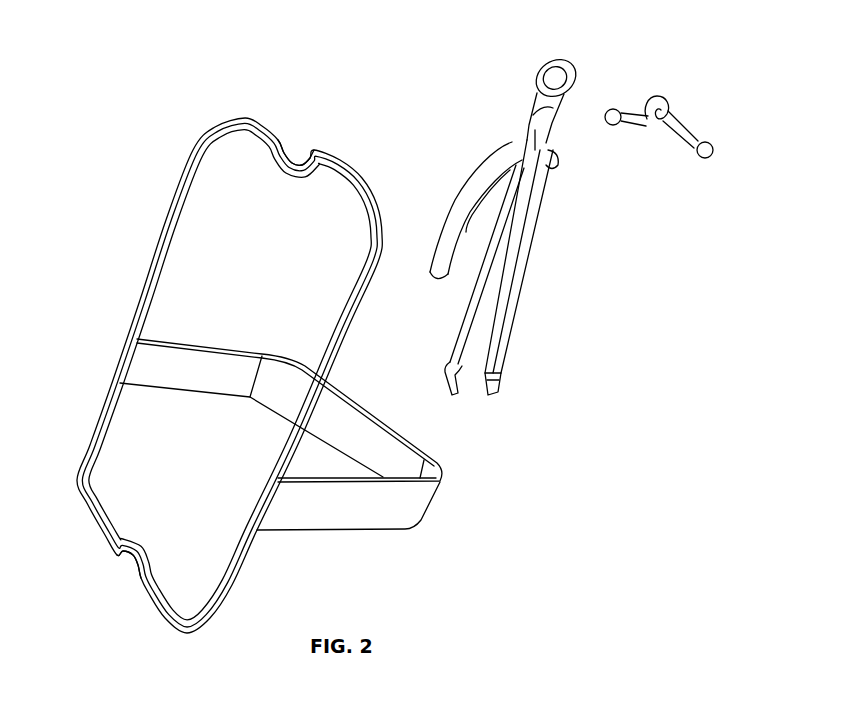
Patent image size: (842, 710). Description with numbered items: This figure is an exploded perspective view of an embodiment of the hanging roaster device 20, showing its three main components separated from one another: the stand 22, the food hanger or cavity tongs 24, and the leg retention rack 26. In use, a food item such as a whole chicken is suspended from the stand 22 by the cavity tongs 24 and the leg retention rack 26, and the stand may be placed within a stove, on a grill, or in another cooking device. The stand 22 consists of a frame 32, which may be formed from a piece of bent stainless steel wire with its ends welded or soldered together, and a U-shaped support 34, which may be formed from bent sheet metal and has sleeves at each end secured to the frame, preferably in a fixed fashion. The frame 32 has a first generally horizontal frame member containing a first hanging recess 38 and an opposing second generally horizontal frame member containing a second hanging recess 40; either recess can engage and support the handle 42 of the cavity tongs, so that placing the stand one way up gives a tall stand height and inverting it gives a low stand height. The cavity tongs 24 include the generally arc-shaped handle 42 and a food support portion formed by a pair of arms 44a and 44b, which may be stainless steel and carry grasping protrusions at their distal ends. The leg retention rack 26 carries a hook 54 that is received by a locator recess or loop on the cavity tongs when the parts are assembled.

The hanging roaster device 20 is at (198, 66).
The stand 22 is at (90, 374).
The cavity tongs 24 is at (500, 97).
The leg retention rack 26 is at (693, 104).
The frame 32 is at (133, 290).
The support 34 is at (378, 534).
The first hanging recess 38 is at (290, 168).
The second hanging recess 40 is at (140, 553).
The handle 42 is at (476, 172).
The arm 44a is at (508, 335).
The arm 44b is at (460, 331).
The hook 54 is at (653, 95).